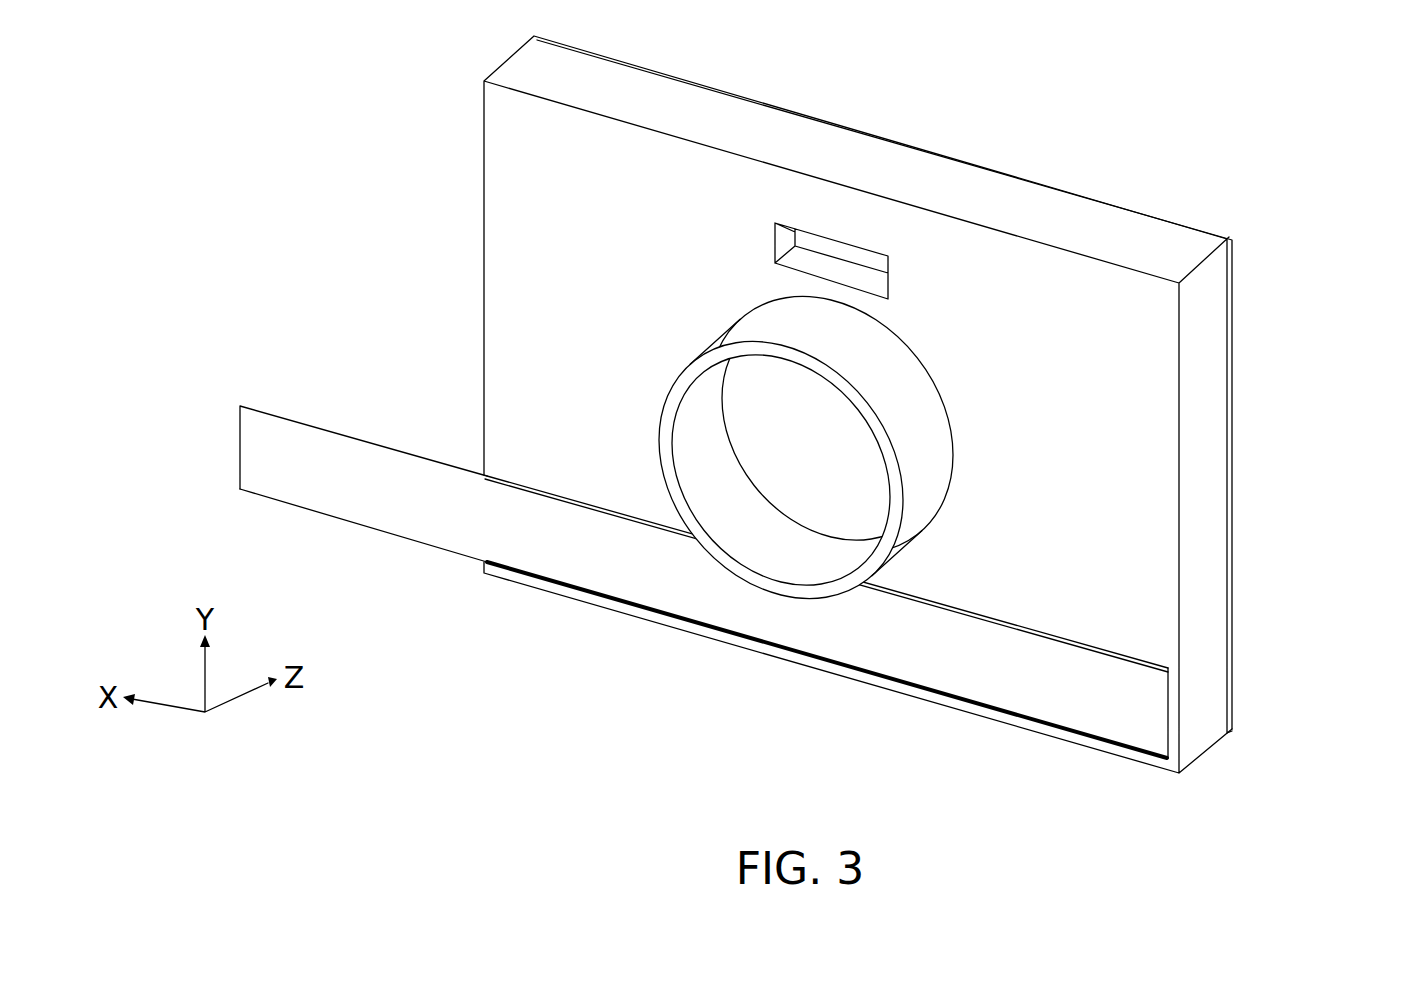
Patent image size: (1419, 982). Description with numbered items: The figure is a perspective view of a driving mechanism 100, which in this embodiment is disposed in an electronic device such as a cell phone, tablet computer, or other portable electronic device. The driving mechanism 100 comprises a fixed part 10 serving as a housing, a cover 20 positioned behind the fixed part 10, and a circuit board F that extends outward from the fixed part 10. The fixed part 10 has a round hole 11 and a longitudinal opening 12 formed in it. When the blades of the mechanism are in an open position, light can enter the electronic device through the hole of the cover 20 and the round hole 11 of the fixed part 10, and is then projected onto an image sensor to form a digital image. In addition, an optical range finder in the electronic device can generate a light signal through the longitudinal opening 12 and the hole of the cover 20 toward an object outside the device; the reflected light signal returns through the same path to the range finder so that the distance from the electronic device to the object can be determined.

The driving mechanism 100 is at (1310, 200).
The fixed part 10 is at (1143, 490).
The round hole 11 is at (837, 392).
The longitudinal opening 12 is at (872, 256).
The cover 20 is at (1233, 358).
The circuit board F is at (366, 470).